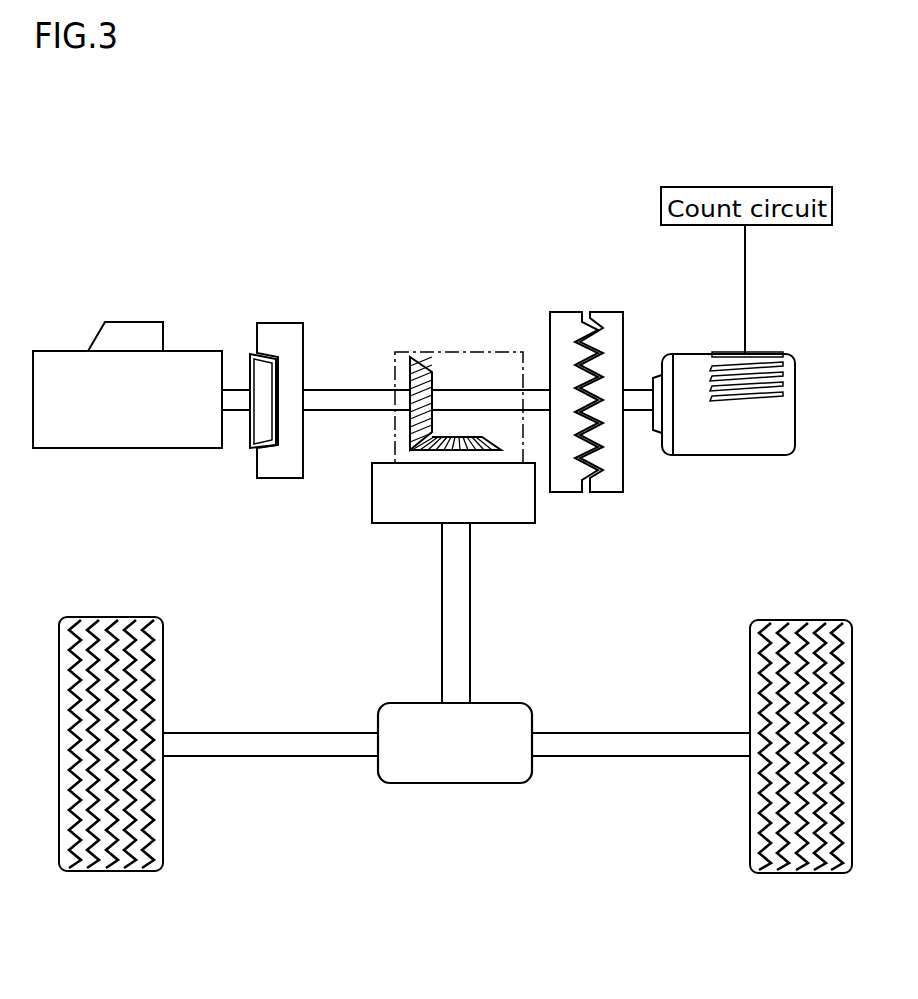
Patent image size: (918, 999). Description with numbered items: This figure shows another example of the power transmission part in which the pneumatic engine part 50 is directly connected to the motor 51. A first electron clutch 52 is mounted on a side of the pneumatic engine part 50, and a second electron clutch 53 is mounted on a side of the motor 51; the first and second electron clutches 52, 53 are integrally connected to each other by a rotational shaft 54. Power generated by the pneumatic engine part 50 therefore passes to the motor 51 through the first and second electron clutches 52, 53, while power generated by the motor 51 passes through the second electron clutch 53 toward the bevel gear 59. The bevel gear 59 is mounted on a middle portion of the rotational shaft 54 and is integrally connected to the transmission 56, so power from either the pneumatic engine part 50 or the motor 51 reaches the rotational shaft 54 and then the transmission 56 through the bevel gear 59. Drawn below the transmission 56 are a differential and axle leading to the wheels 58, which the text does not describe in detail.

The pneumatic engine part 50 is at (53, 360).
The motor 51 is at (698, 360).
The first electron clutch 52 is at (290, 332).
The second electron clutch 53 is at (612, 320).
The rotational shaft 54 is at (537, 397).
The transmission 56 is at (537, 498).
The wheel 58 is at (805, 622).
The bevel gear 59 is at (465, 352).